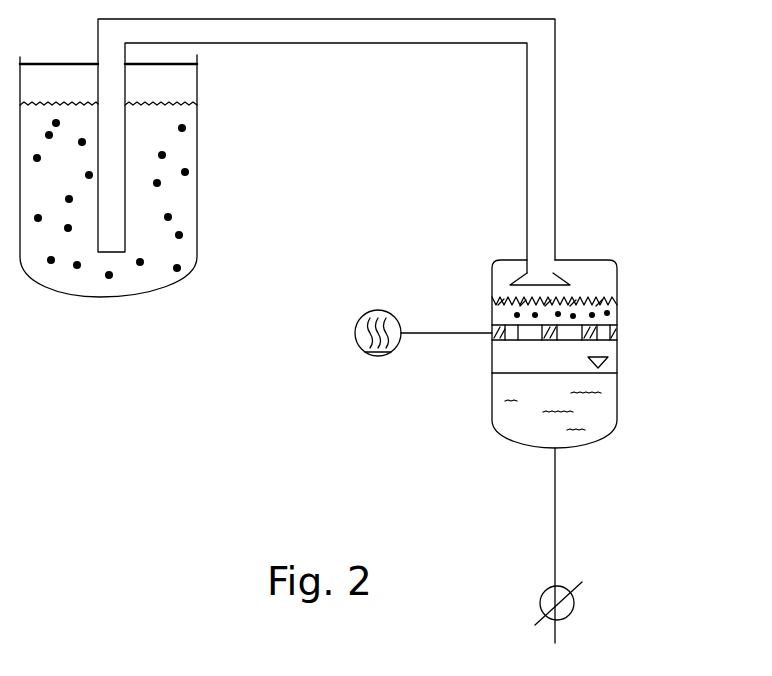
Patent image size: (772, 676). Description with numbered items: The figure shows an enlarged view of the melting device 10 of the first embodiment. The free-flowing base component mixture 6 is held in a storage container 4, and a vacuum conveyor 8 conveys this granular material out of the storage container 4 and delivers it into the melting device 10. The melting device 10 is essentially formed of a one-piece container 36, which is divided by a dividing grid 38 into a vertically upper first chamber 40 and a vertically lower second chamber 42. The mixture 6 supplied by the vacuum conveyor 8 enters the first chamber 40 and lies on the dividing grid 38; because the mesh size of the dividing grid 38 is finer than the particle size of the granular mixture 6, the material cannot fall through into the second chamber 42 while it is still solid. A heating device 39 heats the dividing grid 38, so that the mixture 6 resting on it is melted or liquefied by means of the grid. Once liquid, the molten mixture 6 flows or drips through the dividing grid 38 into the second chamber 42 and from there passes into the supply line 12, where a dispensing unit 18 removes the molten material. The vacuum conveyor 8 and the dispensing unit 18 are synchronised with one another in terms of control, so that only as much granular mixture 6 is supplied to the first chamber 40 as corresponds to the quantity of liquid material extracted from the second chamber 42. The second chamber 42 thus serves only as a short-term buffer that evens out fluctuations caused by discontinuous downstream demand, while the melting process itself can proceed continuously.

The storage container 4 is at (197, 150).
The base component mixture 6 is at (178, 200).
The vacuum conveyor 8 is at (542, 154).
The melting device 10 is at (627, 410).
The supply line 12 is at (557, 500).
The dispensing unit 18 is at (573, 584).
The container 36 is at (702, 260).
The dividing grid 38 is at (607, 336).
The heating device 39 is at (355, 331).
The first chamber 40 is at (607, 274).
The second chamber 42 is at (607, 369).